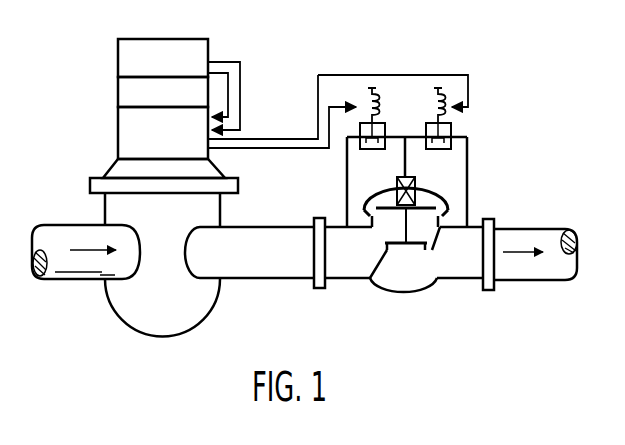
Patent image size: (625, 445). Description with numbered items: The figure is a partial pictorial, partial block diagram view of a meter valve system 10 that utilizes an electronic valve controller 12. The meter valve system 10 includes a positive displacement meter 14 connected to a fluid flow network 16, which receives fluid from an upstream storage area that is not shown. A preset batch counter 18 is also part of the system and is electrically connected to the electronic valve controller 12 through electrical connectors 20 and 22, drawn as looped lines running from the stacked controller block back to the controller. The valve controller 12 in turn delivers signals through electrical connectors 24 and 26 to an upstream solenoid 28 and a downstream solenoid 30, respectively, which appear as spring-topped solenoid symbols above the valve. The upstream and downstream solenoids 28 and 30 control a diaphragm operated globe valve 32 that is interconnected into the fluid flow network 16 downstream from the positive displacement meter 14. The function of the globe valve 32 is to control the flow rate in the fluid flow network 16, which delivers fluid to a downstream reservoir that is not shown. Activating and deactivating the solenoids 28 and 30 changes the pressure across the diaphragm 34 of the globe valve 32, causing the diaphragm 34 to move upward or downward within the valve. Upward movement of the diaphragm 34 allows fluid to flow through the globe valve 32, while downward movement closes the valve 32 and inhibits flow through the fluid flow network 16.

The meter valve system 10 is at (98, 296).
The electronic valve controller 12 is at (118, 118).
The positive displacement meter 14 is at (219, 300).
The fluid flow network 16 is at (287, 226).
The preset batch counter 18 is at (118, 58).
The electrical connector 20 is at (241, 63).
The electrical connector 22 is at (228, 103).
The electrical connector 24 is at (430, 75).
The electrical connector 26 is at (258, 150).
The upstream solenoid 28 is at (360, 128).
The downstream solenoid 30 is at (451, 128).
The diaphragm operated globe valve 32 is at (388, 288).
The diaphragm 34 is at (414, 205).